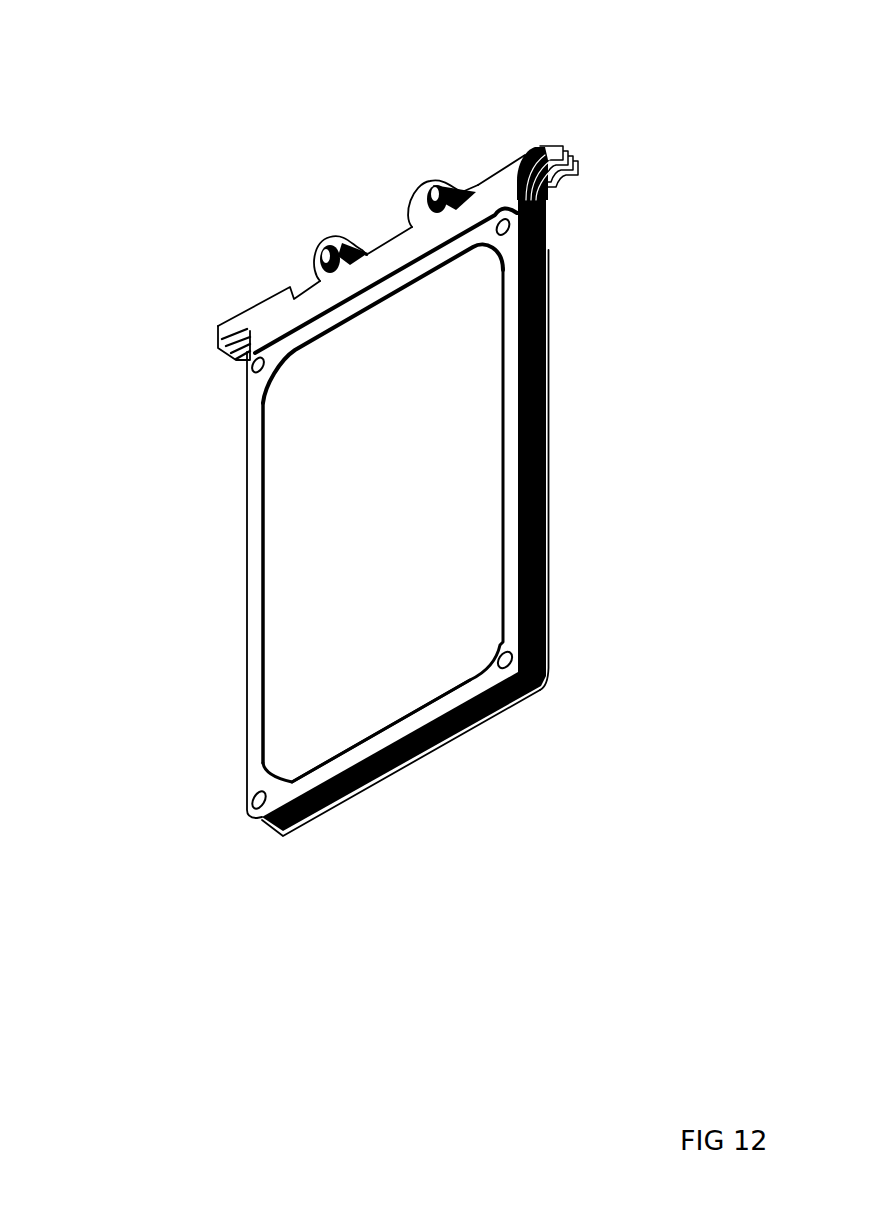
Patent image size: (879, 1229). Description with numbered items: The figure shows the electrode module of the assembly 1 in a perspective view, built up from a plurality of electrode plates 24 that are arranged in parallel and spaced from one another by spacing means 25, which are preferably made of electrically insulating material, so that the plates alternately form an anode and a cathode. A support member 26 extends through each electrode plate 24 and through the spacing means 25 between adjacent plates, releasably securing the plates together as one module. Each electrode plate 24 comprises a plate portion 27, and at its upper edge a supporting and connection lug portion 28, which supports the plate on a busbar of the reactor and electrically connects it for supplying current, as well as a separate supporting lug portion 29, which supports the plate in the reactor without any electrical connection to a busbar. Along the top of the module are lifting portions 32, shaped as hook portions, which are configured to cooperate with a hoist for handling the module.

The display device 1 is at (160, 256).
The electrode plate 24 is at (290, 487).
The spacing means 25 is at (548, 484).
The support member 26 is at (510, 227).
The plate portion 27 is at (333, 612).
The supporting and connection lug portion 28 is at (550, 145).
The supporting lug portion 29 is at (525, 150).
The lifting portion 32 is at (330, 242).